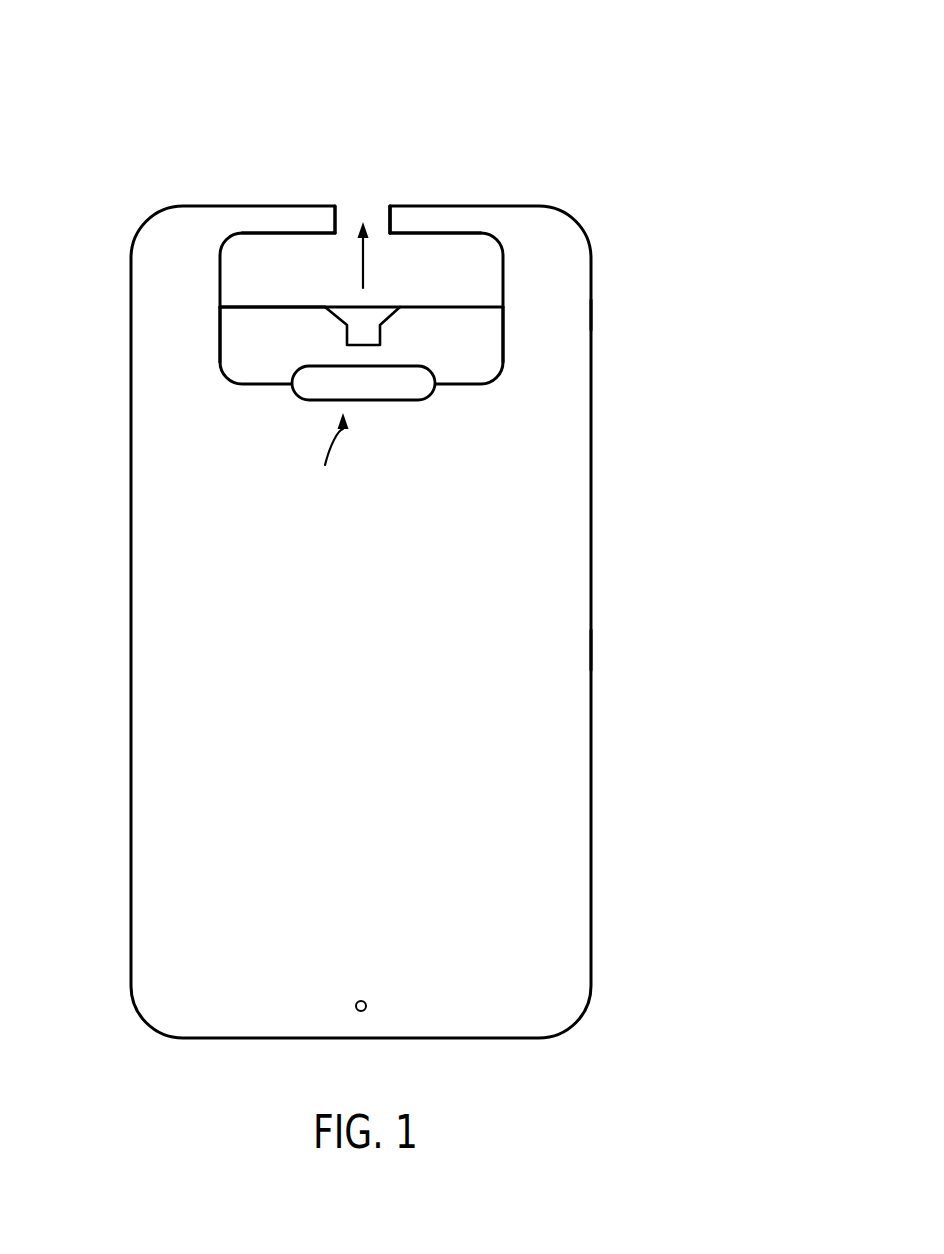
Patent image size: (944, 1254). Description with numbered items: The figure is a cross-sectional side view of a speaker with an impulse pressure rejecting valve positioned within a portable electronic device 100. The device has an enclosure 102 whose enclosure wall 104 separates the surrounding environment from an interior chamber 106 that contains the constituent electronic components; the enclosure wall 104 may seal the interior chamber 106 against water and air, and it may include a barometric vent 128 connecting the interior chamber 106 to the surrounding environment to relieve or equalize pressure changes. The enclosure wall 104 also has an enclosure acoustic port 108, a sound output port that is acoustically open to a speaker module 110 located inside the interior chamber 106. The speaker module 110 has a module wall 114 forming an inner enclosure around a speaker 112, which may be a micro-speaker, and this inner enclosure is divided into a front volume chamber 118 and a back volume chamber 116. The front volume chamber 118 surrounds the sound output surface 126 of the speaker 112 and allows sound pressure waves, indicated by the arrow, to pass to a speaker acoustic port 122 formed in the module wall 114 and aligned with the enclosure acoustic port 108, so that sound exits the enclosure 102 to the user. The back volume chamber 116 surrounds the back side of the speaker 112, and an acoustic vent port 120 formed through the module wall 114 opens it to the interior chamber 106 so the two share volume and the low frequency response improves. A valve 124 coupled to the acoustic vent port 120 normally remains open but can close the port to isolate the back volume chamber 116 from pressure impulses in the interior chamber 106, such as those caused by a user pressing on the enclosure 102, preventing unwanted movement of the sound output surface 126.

The electronic device 100 is at (397, 550).
The enclosure 102 is at (611, 529).
The enclosure wall 104 is at (591, 313).
The interior chamber 106 is at (565, 638).
The enclosure acoustic port 108 is at (389, 205).
The speaker module 110 is at (520, 218).
The speaker 112 is at (330, 310).
The module wall 114 is at (503, 282).
The back volume chamber 116 is at (496, 342).
The front volume chamber 118 is at (257, 260).
The acoustic vent port 120 is at (435, 383).
The speaker acoustic port 122 is at (390, 233).
The valve 124 is at (328, 455).
The sound output surface 126 is at (346, 306).
The barometric vent 128 is at (366, 1008).